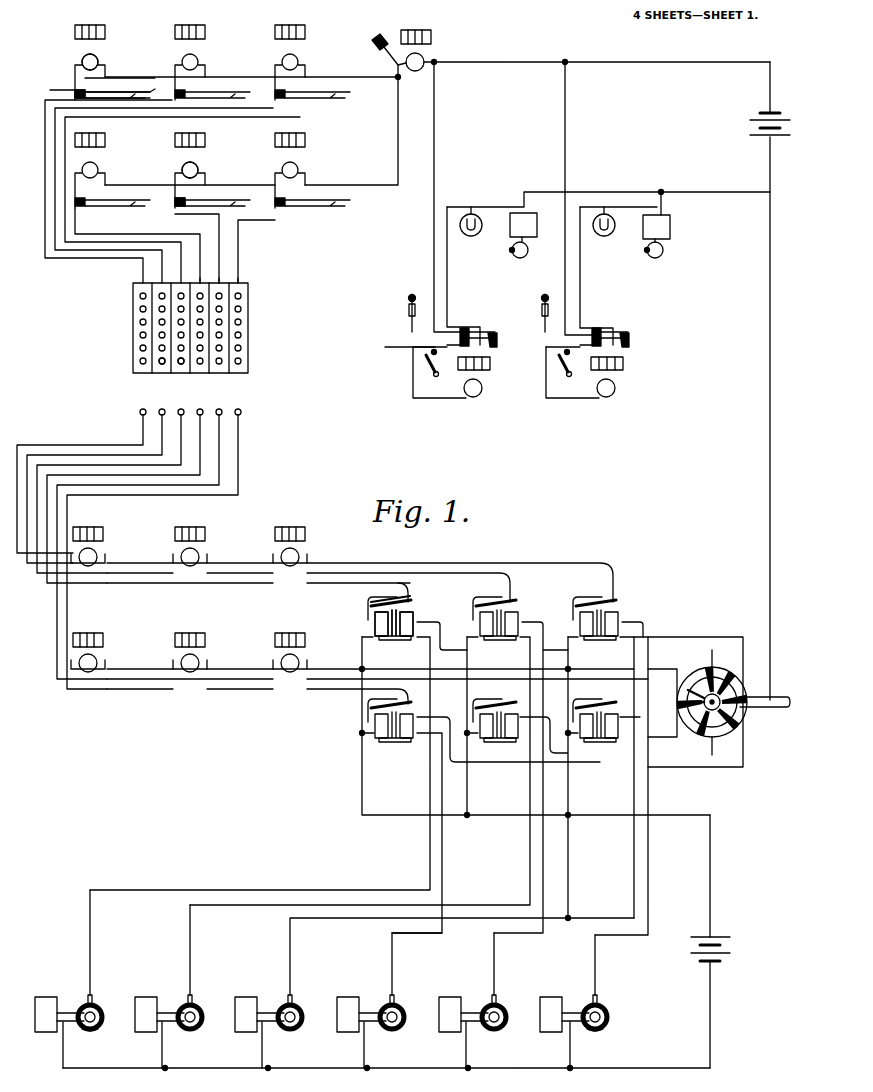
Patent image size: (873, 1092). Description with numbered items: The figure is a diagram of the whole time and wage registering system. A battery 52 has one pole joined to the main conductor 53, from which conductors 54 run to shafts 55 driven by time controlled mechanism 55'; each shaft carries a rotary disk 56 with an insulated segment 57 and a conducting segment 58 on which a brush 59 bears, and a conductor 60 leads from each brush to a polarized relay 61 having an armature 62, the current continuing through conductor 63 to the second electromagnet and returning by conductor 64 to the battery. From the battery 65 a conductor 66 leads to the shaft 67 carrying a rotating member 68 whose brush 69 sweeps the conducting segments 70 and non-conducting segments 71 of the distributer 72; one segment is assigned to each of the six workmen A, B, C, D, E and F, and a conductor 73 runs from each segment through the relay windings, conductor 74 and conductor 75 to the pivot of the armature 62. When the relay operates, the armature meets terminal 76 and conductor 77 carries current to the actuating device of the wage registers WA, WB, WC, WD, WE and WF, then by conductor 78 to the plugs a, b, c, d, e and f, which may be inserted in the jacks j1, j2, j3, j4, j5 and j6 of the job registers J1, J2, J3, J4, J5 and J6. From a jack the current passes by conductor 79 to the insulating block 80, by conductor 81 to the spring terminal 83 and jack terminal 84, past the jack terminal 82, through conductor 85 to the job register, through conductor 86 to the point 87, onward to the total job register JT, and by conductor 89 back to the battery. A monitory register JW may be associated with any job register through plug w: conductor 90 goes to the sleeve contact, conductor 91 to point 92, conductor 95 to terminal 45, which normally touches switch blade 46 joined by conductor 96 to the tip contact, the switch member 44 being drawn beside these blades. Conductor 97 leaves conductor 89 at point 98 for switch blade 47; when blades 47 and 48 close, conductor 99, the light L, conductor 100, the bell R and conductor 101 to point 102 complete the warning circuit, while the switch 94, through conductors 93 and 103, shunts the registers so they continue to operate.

The contact 44 is at (463, 327).
The terminal 45 is at (492, 362).
The switch blade 46 is at (498, 338).
The switch blade 47 is at (478, 336).
The switch blade 48 is at (487, 330).
The battery 52 is at (730, 947).
The conductor 53 is at (712, 1041).
The conductors 54 is at (63, 1055).
The shaft 55 is at (323, 1001).
The time controlled mechanism 55' is at (296, 997).
The rotary disk 56 is at (100, 1006).
The insulated segment 57 is at (103, 1017).
The conducting segment 58 is at (100, 1030).
The brush 59 is at (94, 992).
The conductor 60 is at (133, 890).
The polarized relay 61 is at (372, 630).
The armature 62 is at (372, 604).
The conductor 63 is at (398, 632).
The conductor 64 is at (362, 772).
The battery 65 is at (757, 115).
The conductor 66 is at (768, 290).
The shaft 67 is at (775, 698).
The rotating member 68 is at (700, 700).
The brush 69 is at (681, 702).
The conducting segments 70 is at (722, 668).
The non-conducting segments 71 is at (740, 662).
The distributer 72 is at (722, 734).
The conductor 73 is at (546, 672).
The conductor 74 is at (417, 615).
The conductor 75 is at (380, 600).
The terminal 76 is at (412, 600).
The conductor 77 is at (298, 583).
The conductor 78 is at (64, 447).
The conductor 79 is at (70, 262).
The insulating block 80 is at (75, 88).
The conductor 81 is at (172, 214).
The jack terminal 82 is at (282, 230).
The spring terminal 83 is at (106, 74).
The jack terminal 84 is at (108, 88).
The conductor 85 is at (83, 60).
The conductor 86 is at (332, 77).
The point 87 is at (398, 82).
The conductor 89 is at (521, 64).
The conductor 90 is at (447, 400).
The conductor 91 is at (476, 398).
The point 92 is at (444, 378).
The conductor 93 is at (436, 375).
The switch 94 is at (426, 358).
The conductor 95 is at (440, 365).
The conductor 96 is at (445, 276).
The conductor 97 is at (432, 222).
The point 98 is at (440, 62).
The conductor 99 is at (534, 276).
The conductor 100 is at (497, 207).
The conductor 101 is at (600, 195).
The point 102 is at (768, 190).
The conductor 103 is at (401, 342).
The job register J1 is at (112, 52).
The job register J2 is at (212, 52).
The job register J3 is at (312, 52).
The job register J4 is at (112, 169).
The job register J5 is at (212, 169).
The job register J6 is at (312, 169).
The total job register JT is at (414, 41).
The monitory register JW is at (488, 372).
The wage register WA is at (88, 536).
The wage register WB is at (190, 536).
The wage register WC is at (290, 536).
The wage register WD is at (88, 639).
The wage register WE is at (190, 639).
The wage register WF is at (290, 639).
The workman A is at (680, 690).
The workman B is at (712, 660).
The workman C is at (750, 680).
The workman D is at (750, 722).
The workman E is at (716, 773).
The workman F is at (694, 730).
The light L is at (472, 234).
The bell R is at (528, 241).
The plug w is at (397, 314).
The jacks j1 is at (140, 297).
The jacks j2 is at (162, 364).
The jacks j3 is at (183, 364).
The jacks j4 is at (230, 238).
The jacks j5 is at (220, 296).
The jacks j6 is at (240, 290).
The plug a is at (137, 412).
The plug b is at (157, 409).
The plug c is at (176, 412).
The plug d is at (195, 412).
The plug e is at (214, 412).
The plug f is at (233, 412).